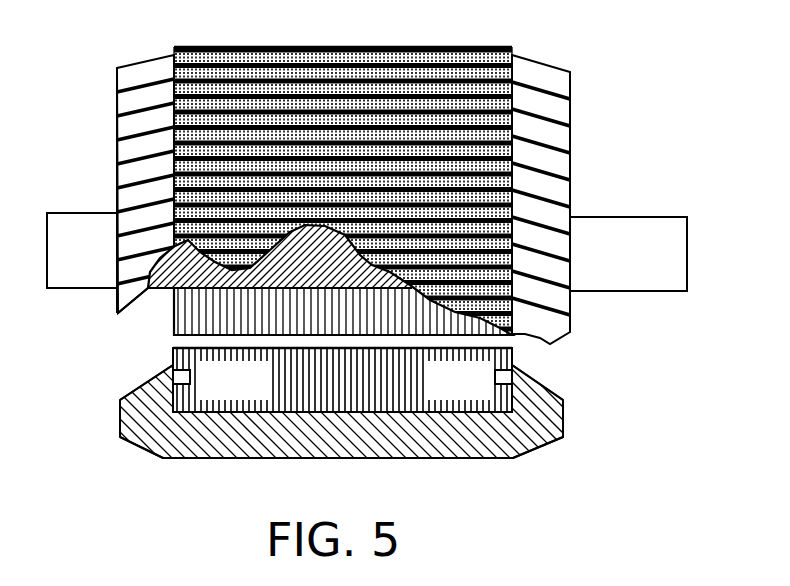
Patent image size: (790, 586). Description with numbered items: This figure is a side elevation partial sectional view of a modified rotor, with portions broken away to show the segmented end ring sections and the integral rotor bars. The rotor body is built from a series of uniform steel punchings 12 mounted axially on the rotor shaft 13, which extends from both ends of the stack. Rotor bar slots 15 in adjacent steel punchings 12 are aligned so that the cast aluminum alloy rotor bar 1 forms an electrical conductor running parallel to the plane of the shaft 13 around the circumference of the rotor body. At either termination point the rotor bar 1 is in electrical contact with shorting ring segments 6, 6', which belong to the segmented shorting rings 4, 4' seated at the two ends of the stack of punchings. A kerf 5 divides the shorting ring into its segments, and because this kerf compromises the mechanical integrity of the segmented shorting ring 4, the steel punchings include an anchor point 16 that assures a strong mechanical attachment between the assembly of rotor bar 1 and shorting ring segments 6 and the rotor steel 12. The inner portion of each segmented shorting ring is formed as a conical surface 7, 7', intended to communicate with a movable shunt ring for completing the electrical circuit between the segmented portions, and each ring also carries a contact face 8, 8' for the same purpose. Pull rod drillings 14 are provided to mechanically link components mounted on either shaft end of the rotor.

The rotor bar 1 is at (512, 220).
The segmented shorting ring 4 is at (145, 164).
The segmented shorting ring 4' is at (541, 183).
The kerf 5 is at (572, 180).
The shorting ring segment 6 is at (96, 190).
The shorting ring segment 6' is at (363, 367).
The conical surface 7 is at (130, 383).
The conical surface 7' is at (554, 383).
The contact face 8 is at (98, 424).
The contact face 8' is at (581, 418).
The steel punching 12 is at (464, 47).
The rotor shaft 13 is at (648, 217).
The pull rod drilling 14 is at (172, 344).
The rotor bar slot 15 is at (472, 133).
The anchor point 16 is at (192, 378).